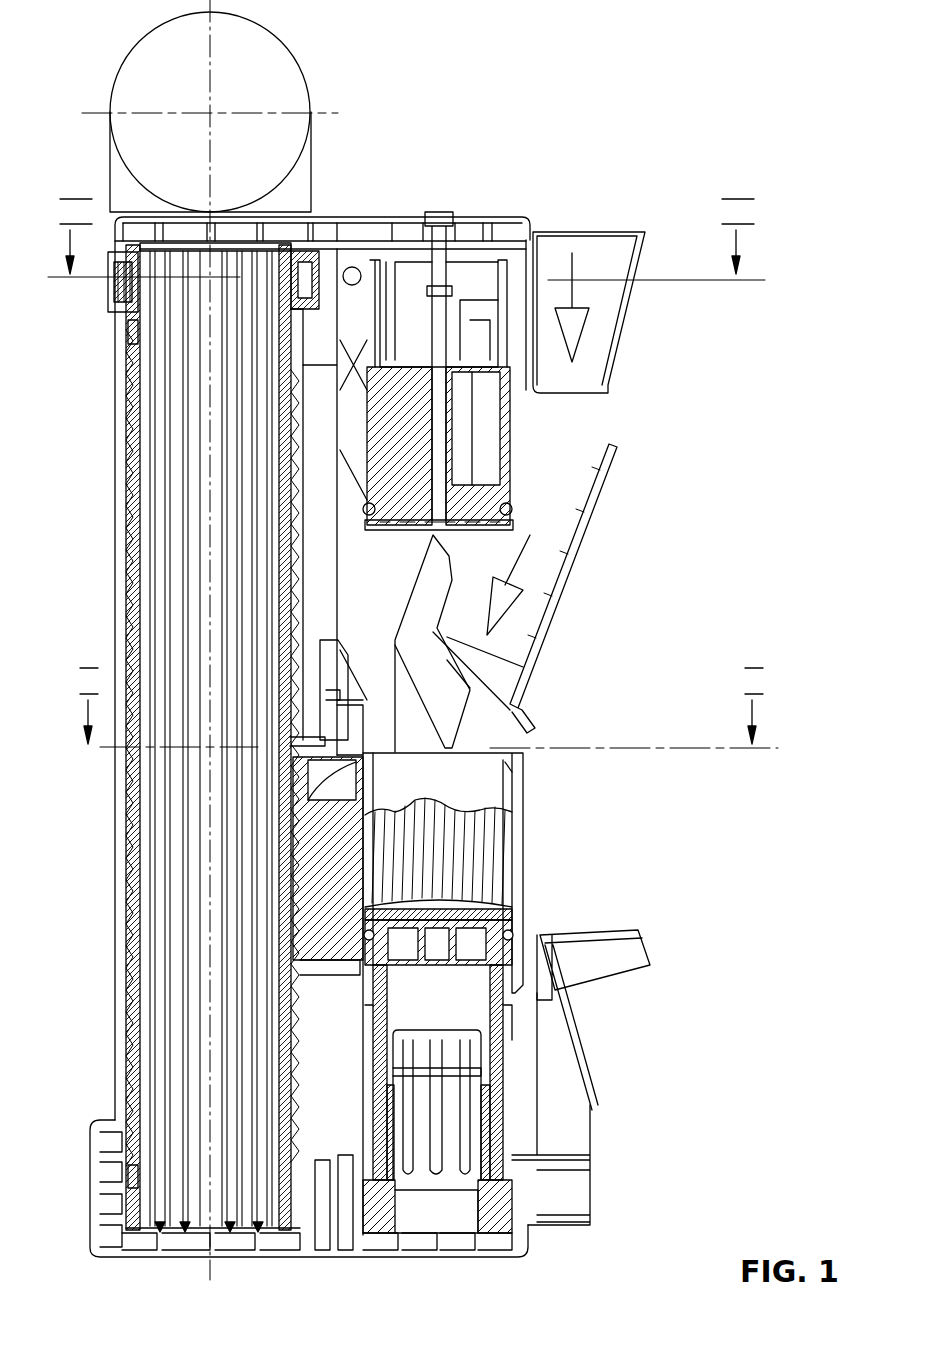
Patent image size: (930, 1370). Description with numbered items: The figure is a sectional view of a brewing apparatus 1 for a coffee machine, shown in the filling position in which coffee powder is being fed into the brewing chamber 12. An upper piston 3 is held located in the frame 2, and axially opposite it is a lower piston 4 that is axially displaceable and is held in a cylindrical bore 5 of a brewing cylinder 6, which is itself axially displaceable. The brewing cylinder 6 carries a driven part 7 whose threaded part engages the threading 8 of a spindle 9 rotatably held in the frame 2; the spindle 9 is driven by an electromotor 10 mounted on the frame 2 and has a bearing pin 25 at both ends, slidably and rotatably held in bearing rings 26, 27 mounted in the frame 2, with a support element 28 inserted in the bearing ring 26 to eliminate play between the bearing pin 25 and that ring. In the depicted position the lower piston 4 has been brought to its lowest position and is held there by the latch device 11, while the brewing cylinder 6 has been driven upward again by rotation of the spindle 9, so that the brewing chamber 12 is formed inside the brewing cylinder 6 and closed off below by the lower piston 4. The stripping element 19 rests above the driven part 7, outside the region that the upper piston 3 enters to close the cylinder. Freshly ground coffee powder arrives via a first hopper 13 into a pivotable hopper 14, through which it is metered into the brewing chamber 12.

The brewing apparatus 1 is at (650, 622).
The frame 2 is at (372, 224).
The upper piston 3 is at (485, 425).
The lower piston 4 is at (475, 1005).
The cylindrical bore 5 is at (497, 765).
The brewing cylinder 6 is at (522, 855).
The driven part 7 is at (325, 875).
The threading 8 is at (128, 522).
The spindle 9 is at (175, 783).
The electromotor 10 is at (268, 68).
The latch device 11 is at (512, 1088).
The brewing chamber 12 is at (486, 866).
The first hopper 13 is at (632, 300).
The pivotable hopper 14 is at (597, 525).
The stripping element 19 is at (330, 690).
The bearing pin 25 is at (132, 332).
The bearing ring 26 is at (305, 245).
The bearing ring 27 is at (128, 1205).
The support element 28 is at (117, 288).